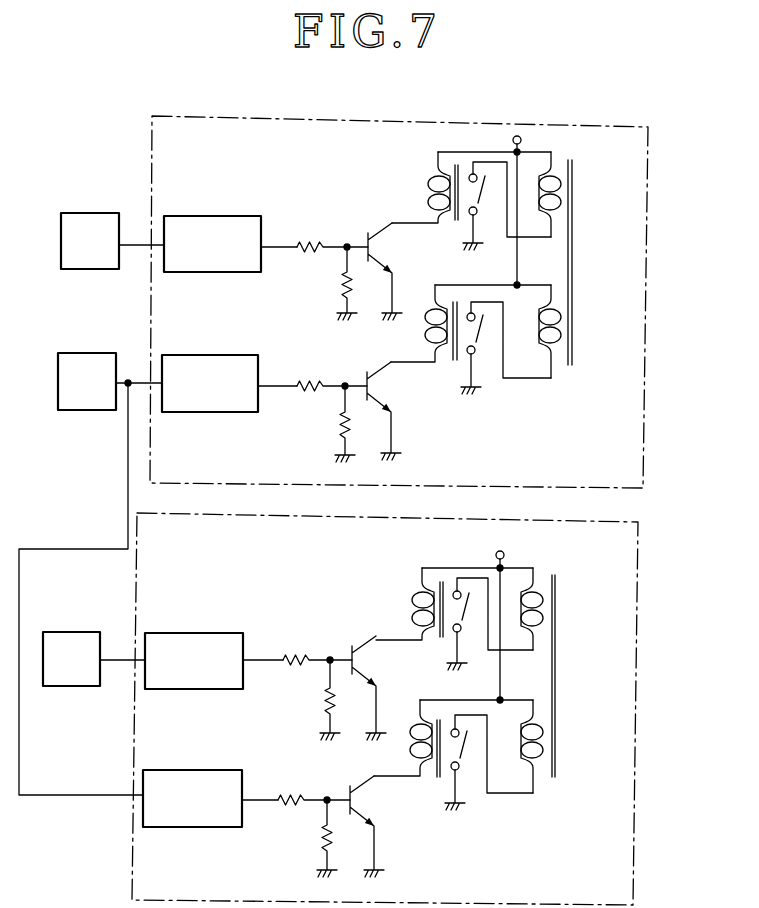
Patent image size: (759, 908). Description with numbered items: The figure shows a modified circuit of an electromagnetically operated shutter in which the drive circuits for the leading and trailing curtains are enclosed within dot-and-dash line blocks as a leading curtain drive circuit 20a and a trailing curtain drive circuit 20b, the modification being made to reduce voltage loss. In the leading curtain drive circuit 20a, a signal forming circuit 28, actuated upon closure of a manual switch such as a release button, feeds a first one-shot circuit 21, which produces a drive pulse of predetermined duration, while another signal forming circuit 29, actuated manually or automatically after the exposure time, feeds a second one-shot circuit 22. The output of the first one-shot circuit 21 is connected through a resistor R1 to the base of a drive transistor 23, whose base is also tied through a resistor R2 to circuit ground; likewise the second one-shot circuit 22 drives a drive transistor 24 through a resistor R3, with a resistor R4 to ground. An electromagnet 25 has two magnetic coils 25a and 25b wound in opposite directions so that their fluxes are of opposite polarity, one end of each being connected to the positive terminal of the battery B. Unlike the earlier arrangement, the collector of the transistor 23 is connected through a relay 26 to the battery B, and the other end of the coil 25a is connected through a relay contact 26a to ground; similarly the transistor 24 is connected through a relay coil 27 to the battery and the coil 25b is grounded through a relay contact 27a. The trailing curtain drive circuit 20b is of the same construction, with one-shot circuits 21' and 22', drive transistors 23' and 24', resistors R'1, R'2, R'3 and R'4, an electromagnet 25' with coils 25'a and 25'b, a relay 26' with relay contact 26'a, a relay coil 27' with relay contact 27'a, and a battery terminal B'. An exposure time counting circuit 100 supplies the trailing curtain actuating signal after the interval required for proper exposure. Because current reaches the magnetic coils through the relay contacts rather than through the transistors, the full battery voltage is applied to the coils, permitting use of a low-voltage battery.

The leading curtain drive circuit 20a is at (647, 148).
The trailing curtain drive circuit 20b is at (638, 561).
The first one-shot circuit 21 is at (230, 244).
The second one-shot circuit 22 is at (229, 383).
The drive transistor 23 is at (377, 247).
The drive transistor 24 is at (379, 392).
The electromagnet 25 is at (587, 262).
The magnetic coil 25a is at (572, 173).
The magnetic coil 25b is at (570, 332).
The relay 26 is at (424, 187).
The relay contact 26a is at (487, 214).
The relay coil 27 is at (424, 317).
The relay contact 27a is at (483, 352).
The signal forming circuit 28 is at (112, 241).
The signal forming circuit 29 is at (110, 381).
The resistor R1 is at (332, 233).
The resistor R2 is at (337, 283).
The resistor R3 is at (332, 371).
The resistor R4 is at (333, 424).
The battery B is at (493, 206).
The exposure time counting circuit 100 is at (94, 659).
The first one-shot circuit 21' is at (214, 661).
The second one-shot circuit 22' is at (210, 798).
The drive transistor 23' is at (366, 669).
The drive transistor 24' is at (363, 810).
The electromagnet 25' is at (572, 676).
The magnetic coil 25'a is at (561, 609).
The magnetic coil 25'b is at (560, 746).
The relay 26' is at (409, 604).
The relay contact 26'a is at (490, 637).
The relay coil 27' is at (407, 738).
The relay contact 27'a is at (489, 775).
The resistor R'1 is at (317, 646).
The resistor R'2 is at (318, 700).
The resistor R'3 is at (314, 786).
The resistor R'4 is at (316, 838).
The battery B' is at (476, 621).